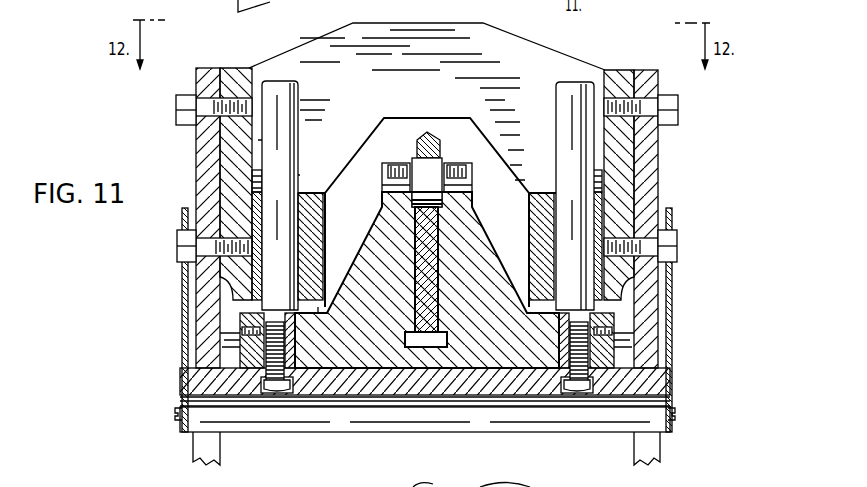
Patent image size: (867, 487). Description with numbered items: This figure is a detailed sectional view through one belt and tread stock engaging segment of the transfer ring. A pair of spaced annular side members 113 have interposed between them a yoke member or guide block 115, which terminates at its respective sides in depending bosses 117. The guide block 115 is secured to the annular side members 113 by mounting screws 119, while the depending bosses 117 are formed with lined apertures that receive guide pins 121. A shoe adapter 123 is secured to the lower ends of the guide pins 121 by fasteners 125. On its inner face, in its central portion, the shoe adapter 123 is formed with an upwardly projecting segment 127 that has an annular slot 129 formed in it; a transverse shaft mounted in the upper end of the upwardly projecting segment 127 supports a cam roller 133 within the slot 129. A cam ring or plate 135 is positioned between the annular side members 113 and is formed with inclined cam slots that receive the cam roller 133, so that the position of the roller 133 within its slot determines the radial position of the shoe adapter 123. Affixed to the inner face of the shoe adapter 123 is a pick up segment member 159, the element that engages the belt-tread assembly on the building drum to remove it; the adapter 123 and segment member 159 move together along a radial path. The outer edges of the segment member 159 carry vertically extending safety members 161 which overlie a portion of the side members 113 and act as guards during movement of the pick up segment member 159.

The annular side members 113 is at (640, 153).
The yoke members or guide blocks 115 is at (448, 43).
The depending bosses 117 is at (230, 262).
The mounting screws 119 is at (176, 122).
The guide pins 121 is at (283, 140).
The shoe adapter 123 is at (640, 387).
The fasteners 125 is at (587, 380).
The upwardly projecting segment 127 is at (372, 318).
The annular slot 129 is at (400, 390).
The cam roller 133 is at (423, 170).
The cam ring or plate 135 is at (428, 262).
The pick up segment member 159 is at (527, 417).
The safety members 161 is at (182, 313).